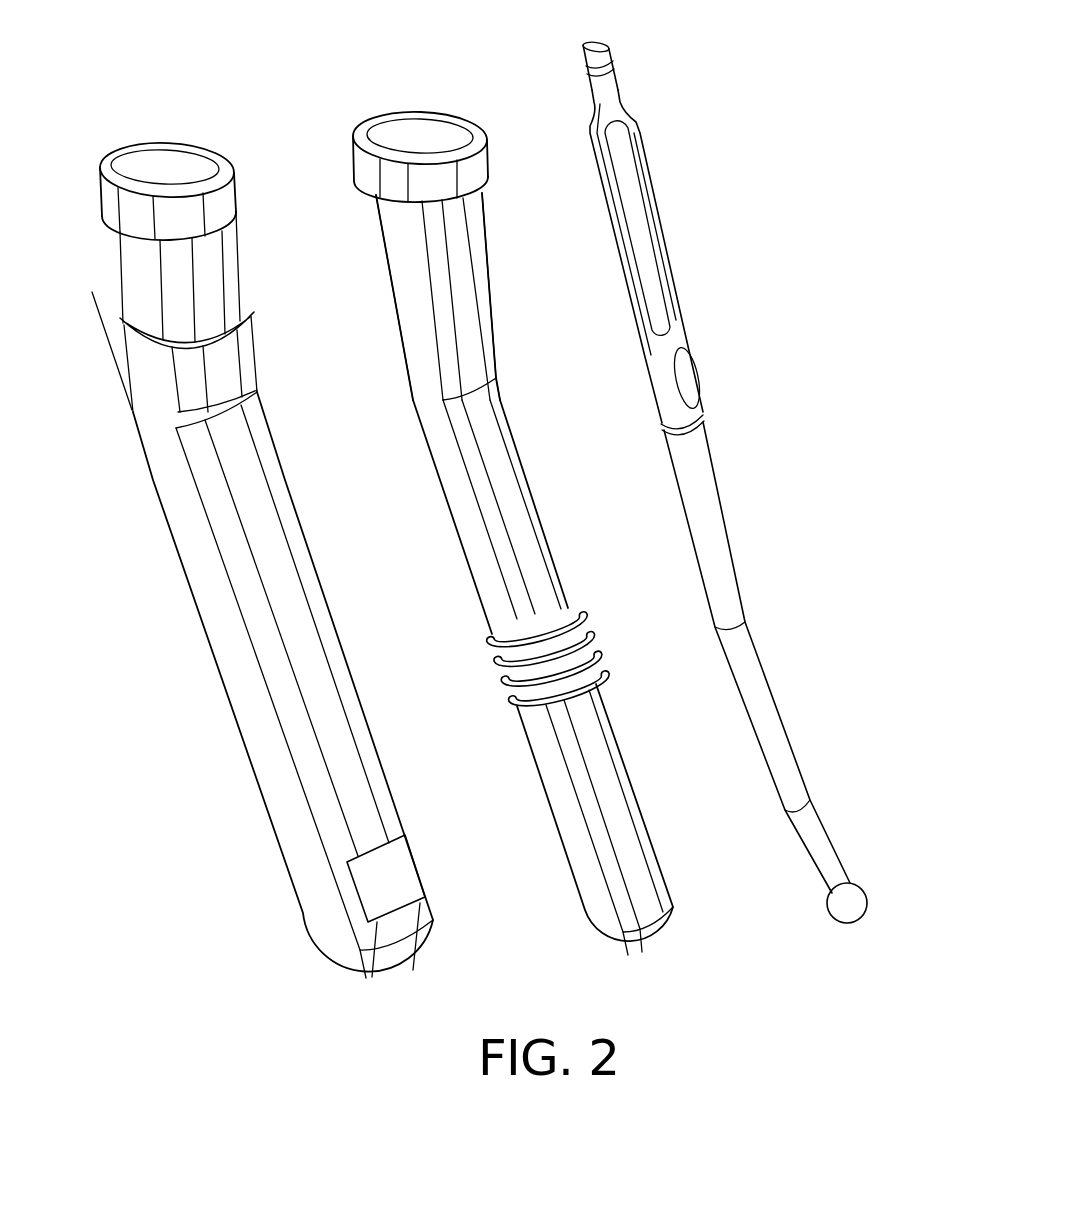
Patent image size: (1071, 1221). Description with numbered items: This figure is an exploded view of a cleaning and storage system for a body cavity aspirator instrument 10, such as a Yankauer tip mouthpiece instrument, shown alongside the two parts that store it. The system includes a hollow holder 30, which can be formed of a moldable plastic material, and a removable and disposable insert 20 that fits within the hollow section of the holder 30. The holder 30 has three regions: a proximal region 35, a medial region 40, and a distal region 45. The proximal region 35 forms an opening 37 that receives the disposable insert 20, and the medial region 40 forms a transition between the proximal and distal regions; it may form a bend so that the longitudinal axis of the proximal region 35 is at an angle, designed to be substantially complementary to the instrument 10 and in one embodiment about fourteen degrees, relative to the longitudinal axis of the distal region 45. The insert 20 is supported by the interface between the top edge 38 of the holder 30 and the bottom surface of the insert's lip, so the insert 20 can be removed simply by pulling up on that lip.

The body cavity aspirator instrument 10 is at (648, 48).
The removable and disposable insert 20 is at (444, 97).
The hollow holder 30 is at (190, 131).
The proximal region 35 is at (113, 205).
The opening 37 is at (132, 163).
The top edge 38 is at (226, 160).
The medial region 40 is at (158, 452).
The distal region 45 is at (305, 877).